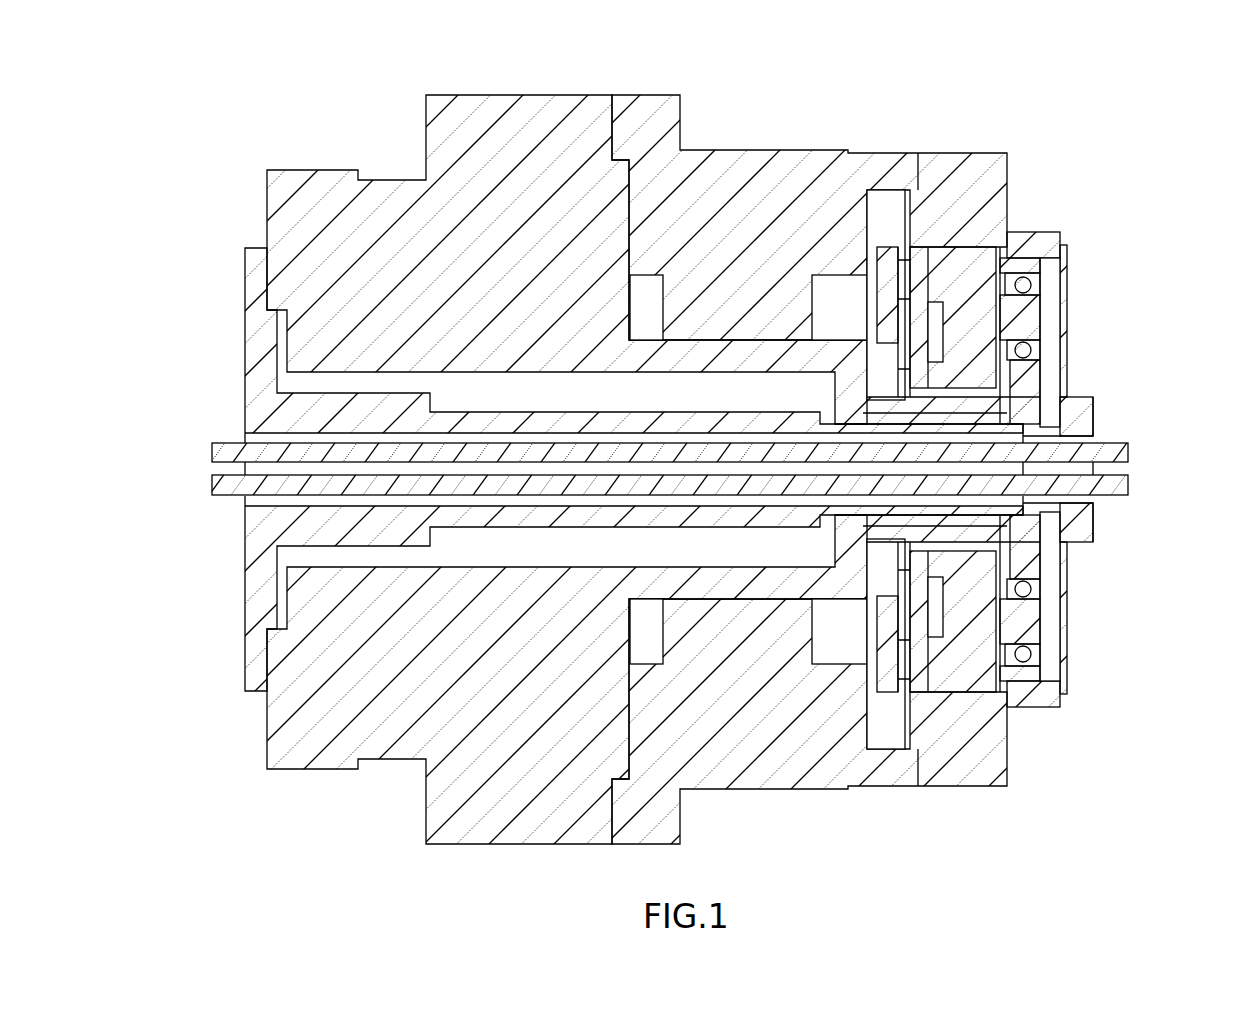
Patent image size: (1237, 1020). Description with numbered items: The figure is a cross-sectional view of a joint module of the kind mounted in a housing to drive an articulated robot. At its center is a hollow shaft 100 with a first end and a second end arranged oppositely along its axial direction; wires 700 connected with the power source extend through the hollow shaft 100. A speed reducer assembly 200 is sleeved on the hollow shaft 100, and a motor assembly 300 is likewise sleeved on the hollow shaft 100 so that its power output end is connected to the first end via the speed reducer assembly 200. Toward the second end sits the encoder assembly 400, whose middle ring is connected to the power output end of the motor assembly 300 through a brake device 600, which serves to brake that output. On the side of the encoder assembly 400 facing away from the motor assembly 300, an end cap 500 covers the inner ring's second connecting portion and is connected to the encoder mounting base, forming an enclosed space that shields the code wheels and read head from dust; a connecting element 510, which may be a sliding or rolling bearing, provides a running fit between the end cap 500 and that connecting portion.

The hollow shaft 100 is at (257, 333).
The speed reducer assembly 200 is at (473, 128).
The motor assembly 300 is at (750, 177).
The encoder assembly 400 is at (1045, 200).
The end cap 500 is at (1068, 308).
The connecting element 510 is at (1095, 413).
The brake device 600 is at (962, 263).
The wires 700 is at (231, 442).